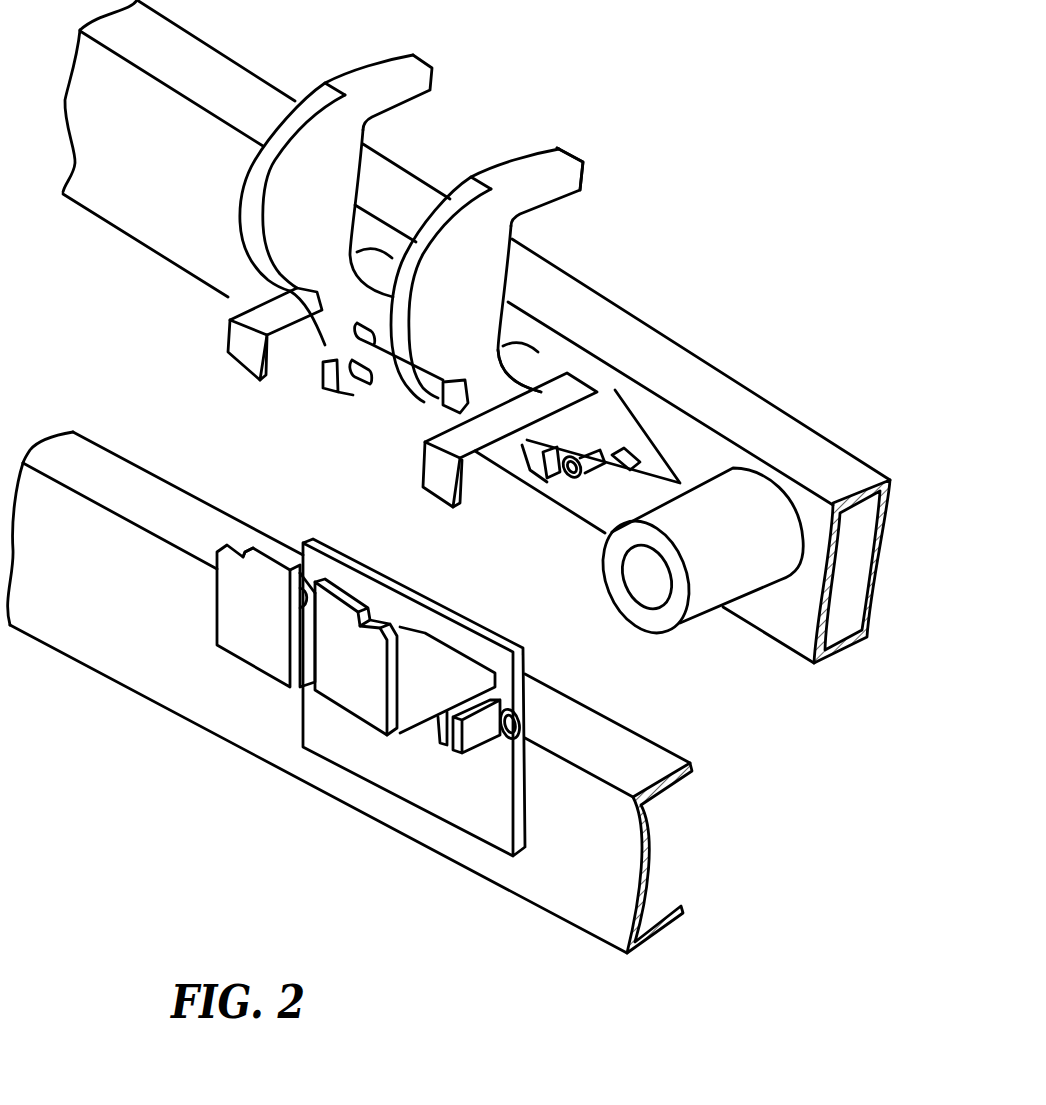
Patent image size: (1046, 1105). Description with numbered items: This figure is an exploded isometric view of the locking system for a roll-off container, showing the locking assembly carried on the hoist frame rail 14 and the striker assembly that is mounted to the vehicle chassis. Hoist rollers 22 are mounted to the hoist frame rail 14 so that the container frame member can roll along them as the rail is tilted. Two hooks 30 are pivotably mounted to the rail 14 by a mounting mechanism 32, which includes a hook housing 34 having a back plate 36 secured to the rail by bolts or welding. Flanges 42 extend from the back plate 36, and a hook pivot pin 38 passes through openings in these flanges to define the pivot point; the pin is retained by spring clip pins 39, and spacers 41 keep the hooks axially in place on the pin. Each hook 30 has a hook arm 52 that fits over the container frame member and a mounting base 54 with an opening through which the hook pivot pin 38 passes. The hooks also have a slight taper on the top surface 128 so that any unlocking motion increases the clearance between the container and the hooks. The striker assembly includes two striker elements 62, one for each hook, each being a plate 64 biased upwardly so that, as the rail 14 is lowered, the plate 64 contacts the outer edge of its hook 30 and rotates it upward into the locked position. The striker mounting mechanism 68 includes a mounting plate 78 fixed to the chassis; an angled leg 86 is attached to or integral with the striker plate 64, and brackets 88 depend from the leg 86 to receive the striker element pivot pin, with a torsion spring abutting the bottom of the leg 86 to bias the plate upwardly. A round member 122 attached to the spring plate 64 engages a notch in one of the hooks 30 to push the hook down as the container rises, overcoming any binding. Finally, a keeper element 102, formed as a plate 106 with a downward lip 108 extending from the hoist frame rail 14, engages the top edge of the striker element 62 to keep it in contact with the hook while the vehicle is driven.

The hoist frame rail 14 is at (807, 450).
The hoist rollers 22 is at (695, 557).
The hooks 30 is at (437, 285).
The mounting mechanism 32 is at (399, 423).
The hook housing 34 is at (553, 477).
The back plate 36 is at (525, 360).
The hook pivot pin 38 is at (392, 355).
The spring clip pins 39 is at (578, 470).
The spacers 41 is at (415, 380).
The flanges 42 is at (540, 483).
The hook arm 52 is at (411, 234).
The mounting base 54 is at (323, 373).
The striker elements 62 is at (326, 748).
The plate 64 is at (243, 630).
The striker mounting mechanism 68 is at (472, 782).
The mounting plate 78 is at (500, 837).
The angled leg 86 is at (447, 680).
The brackets 88 is at (440, 728).
The keeper element 102 is at (395, 423).
The plate 106 is at (273, 302).
The downward lip 108 is at (228, 342).
The round member 122 is at (297, 602).
The top surface 128 is at (560, 160).